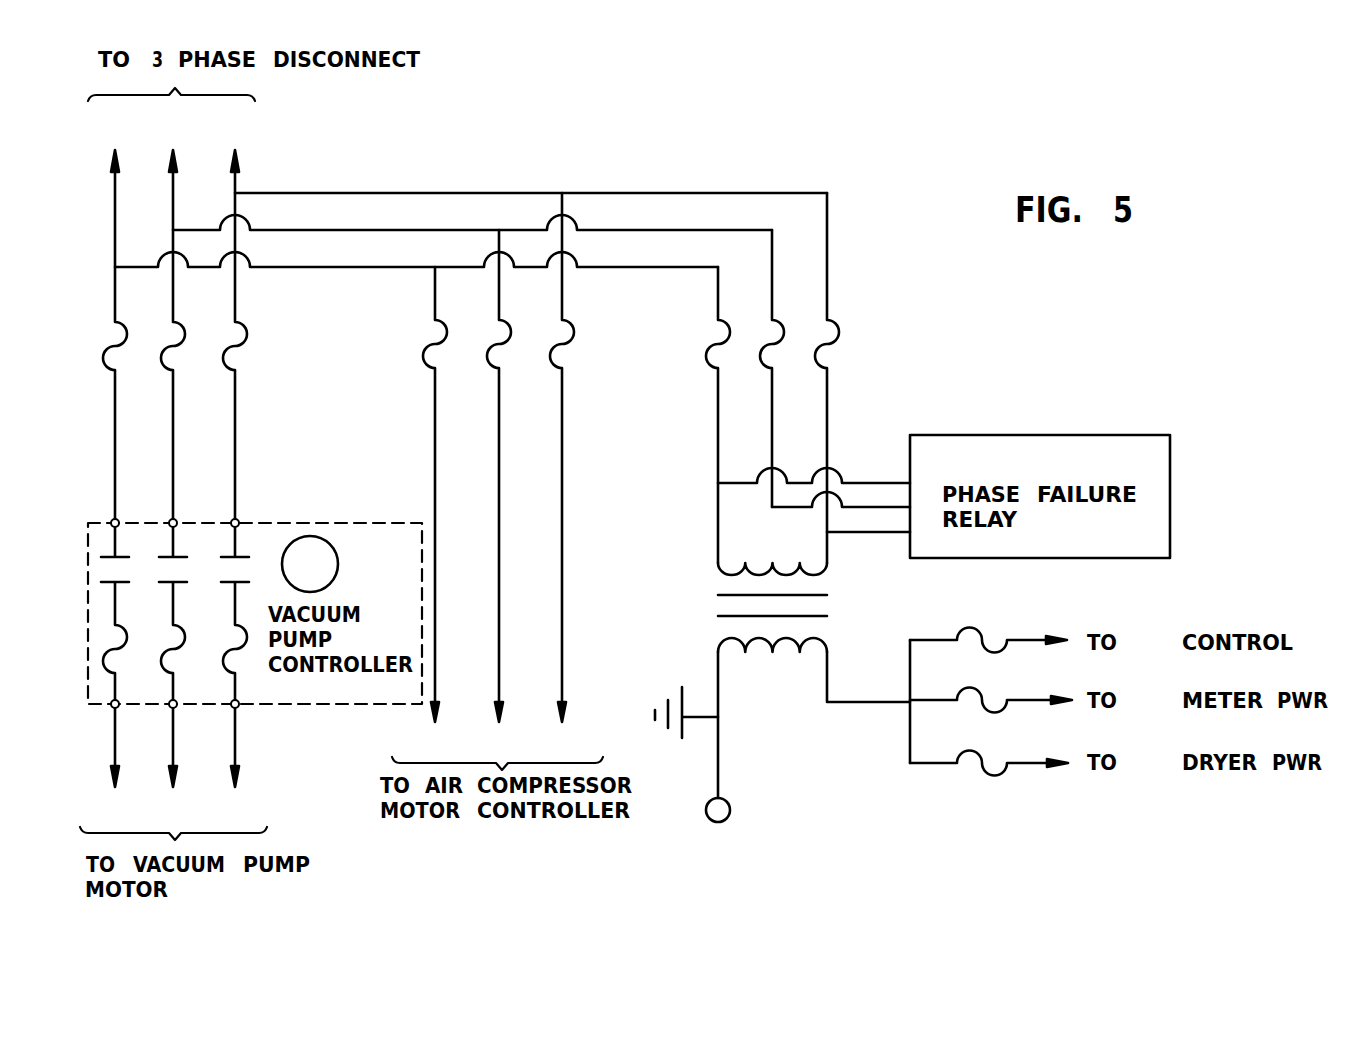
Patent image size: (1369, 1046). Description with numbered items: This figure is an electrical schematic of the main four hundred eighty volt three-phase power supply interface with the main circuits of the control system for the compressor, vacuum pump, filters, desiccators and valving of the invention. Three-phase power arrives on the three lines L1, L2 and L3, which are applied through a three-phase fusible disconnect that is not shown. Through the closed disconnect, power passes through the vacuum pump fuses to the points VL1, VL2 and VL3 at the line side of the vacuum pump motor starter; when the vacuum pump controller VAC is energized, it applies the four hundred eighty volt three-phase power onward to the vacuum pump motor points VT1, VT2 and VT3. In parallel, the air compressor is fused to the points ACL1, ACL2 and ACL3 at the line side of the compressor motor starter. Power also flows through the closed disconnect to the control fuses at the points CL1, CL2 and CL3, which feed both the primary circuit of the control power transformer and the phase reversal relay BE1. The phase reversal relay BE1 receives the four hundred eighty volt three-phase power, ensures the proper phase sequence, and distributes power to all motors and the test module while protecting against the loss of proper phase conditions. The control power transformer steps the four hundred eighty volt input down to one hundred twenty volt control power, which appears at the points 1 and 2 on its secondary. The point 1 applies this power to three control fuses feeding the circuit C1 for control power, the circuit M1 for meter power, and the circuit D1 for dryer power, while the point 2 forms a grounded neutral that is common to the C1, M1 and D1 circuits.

The point 1 is at (855, 677).
The point 2 is at (718, 825).
The three-phase power line L1 is at (112, 313).
The three-phase power line L2 is at (171, 313).
The three-phase power line L3 is at (233, 313).
The vacuum pump line-side point VL1 is at (128, 552).
The vacuum pump line-side point VL2 is at (188, 552).
The vacuum pump line-side point VL3 is at (251, 552).
The vacuum pump motor point VT1 is at (111, 767).
The vacuum pump motor point VT2 is at (174, 767).
The vacuum pump motor point VT3 is at (233, 767).
The air compressor line-side point ACL1 is at (429, 513).
The air compressor line-side point ACL2 is at (496, 495).
The air compressor line-side point ACL3 is at (563, 476).
The control fuse point CL1 is at (732, 415).
The control fuse point CL2 is at (788, 368).
The control fuse point CL3 is at (845, 378).
The phase reversal relay BE1 is at (1040, 496).
The vacuum pump controller VAC is at (310, 564).
The control power circuit C1 is at (1041, 641).
The meter power circuit M1 is at (1043, 701).
The dryer power circuit D1 is at (1041, 762).